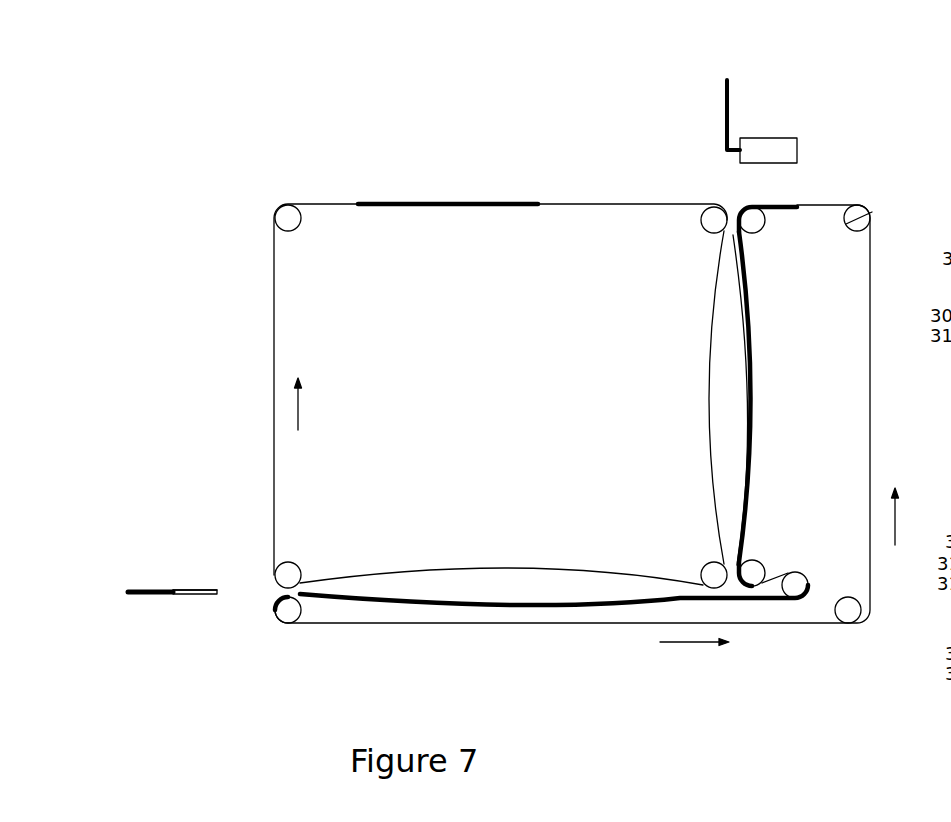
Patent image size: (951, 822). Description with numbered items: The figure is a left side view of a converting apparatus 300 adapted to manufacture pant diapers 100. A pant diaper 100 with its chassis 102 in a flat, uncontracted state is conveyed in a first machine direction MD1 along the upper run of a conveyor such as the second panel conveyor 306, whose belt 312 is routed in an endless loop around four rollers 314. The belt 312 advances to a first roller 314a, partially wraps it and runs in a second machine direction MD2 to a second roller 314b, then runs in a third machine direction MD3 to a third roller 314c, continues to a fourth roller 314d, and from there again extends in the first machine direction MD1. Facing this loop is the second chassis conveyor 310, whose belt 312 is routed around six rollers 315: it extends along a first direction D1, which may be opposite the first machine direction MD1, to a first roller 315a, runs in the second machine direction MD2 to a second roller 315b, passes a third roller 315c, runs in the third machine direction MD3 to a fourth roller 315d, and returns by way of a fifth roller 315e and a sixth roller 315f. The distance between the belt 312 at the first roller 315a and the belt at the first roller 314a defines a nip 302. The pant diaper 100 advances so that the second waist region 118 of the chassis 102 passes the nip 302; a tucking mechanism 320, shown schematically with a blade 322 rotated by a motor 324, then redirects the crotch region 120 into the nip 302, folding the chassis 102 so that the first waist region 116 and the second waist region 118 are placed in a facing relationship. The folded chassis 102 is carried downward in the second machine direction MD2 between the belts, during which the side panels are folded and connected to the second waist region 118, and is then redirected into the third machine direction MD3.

The converting apparatus 300 is at (570, 70).
The nip 302 is at (722, 192).
The second panel conveyor 306 is at (276, 388).
The second chassis conveyor 310 is at (860, 413).
The belt 312 is at (577, 460).
The rollers 314 is at (455, 396).
The first roller 314a is at (712, 228).
The second roller 314b is at (707, 567).
The third roller 314c is at (290, 572).
The fourth roller 314d is at (287, 220).
The rollers 315 is at (567, 432).
The first roller 315a is at (752, 224).
The second roller 315b is at (752, 570).
The third roller 315c is at (787, 580).
The fourth roller 315d is at (288, 614).
The fifth roller 315e is at (852, 618).
The sixth roller 315f is at (870, 214).
The tucking mechanism 320 is at (776, 148).
The blade 322 is at (728, 107).
The motor 324 is at (800, 100).
The pant diaper 100 is at (452, 201).
The chassis 102 is at (298, 342).
The first waist region 116 is at (370, 201).
The second waist region 118 is at (534, 369).
The crotch region 120 is at (452, 204).
The first direction D1 is at (822, 187).
The first machine direction MD1 is at (500, 247).
The second machine direction MD2 is at (668, 413).
The third machine direction MD3 is at (490, 533).